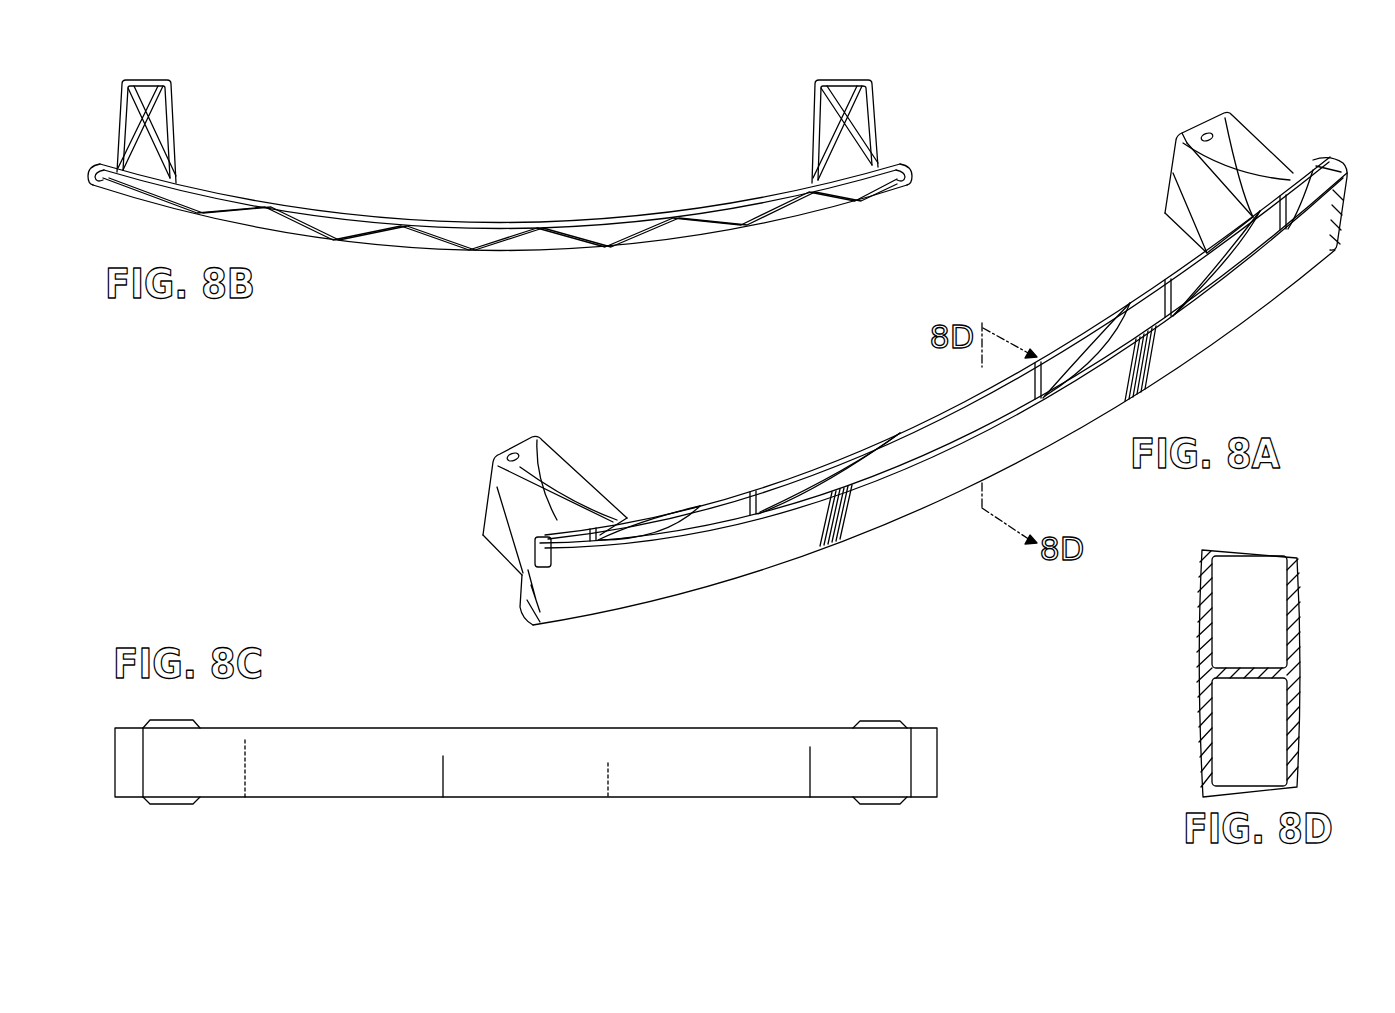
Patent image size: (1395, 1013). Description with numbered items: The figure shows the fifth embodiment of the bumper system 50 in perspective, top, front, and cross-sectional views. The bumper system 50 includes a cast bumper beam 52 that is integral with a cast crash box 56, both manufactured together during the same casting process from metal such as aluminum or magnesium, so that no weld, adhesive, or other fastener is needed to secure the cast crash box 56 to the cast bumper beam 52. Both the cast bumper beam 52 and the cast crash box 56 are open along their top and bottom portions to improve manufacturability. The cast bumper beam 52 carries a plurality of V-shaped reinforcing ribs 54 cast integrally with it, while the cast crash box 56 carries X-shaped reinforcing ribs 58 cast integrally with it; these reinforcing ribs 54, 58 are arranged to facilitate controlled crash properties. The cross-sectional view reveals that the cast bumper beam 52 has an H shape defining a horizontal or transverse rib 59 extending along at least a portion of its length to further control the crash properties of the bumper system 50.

In FIG. 8B, the bumper system 50 is at (870, 66).
In FIG. 8A, the bumper system 50 is at (535, 393).
In FIG. 8C, the bumper system 50 is at (939, 714).
In FIG. 8B, the cast bumper beam 52 is at (808, 217).
In FIG. 8A, the cast bumper beam 52 is at (1233, 323).
In FIG. 8C, the cast bumper beam 52 is at (572, 803).
In FIG. 8D, the cast bumper beam 52 is at (1302, 640).
In FIG. 8B, the reinforcing ribs 54 is at (183, 197).
In FIG. 8A, the reinforcing ribs 54 is at (633, 530).
In FIG. 8B, the cast crash box 56 is at (173, 133).
In FIG. 8A, the cast crash box 56 is at (585, 475).
In FIG. 8C, the cast crash box 56 is at (194, 804).
In FIG. 8B, the reinforcing ribs 58 is at (132, 122).
In FIG. 8A, the reinforcing ribs 58 is at (547, 487).
In FIG. 8D, the transverse rib 59 is at (1253, 668).